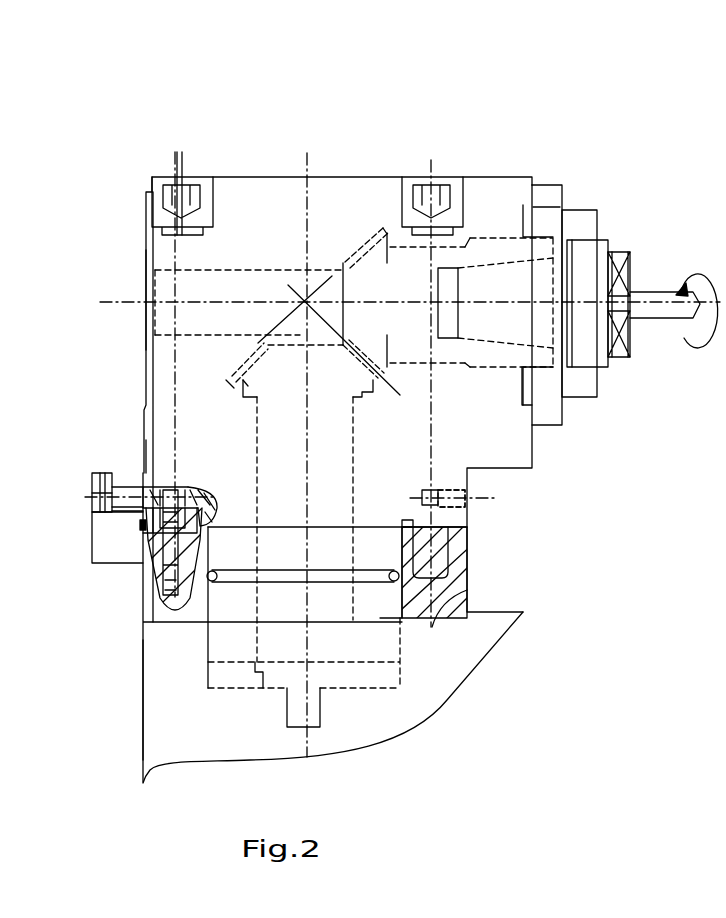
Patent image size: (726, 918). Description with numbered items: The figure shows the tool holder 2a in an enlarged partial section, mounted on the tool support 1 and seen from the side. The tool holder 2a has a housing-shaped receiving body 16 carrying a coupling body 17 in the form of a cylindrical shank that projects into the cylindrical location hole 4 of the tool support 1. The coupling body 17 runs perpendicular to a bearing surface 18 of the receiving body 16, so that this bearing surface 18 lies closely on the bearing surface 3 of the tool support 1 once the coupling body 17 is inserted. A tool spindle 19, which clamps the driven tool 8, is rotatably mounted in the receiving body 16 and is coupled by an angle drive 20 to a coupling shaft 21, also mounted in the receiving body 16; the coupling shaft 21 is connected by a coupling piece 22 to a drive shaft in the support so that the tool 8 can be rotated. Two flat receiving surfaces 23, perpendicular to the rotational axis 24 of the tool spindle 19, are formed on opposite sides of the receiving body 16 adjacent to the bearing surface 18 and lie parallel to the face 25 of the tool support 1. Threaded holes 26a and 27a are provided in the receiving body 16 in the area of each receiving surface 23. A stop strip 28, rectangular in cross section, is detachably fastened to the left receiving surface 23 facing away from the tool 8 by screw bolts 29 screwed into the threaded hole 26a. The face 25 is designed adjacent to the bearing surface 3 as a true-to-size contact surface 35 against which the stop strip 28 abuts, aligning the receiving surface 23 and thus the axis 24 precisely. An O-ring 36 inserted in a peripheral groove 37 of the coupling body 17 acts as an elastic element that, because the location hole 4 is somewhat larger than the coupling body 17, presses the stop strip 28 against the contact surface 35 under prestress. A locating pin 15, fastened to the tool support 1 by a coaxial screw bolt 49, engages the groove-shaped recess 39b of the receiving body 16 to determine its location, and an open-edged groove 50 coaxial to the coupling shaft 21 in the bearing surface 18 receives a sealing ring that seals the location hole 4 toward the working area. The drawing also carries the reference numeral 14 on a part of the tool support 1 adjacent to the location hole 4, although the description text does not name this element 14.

The tool support 1 is at (147, 705).
The tool holder 2a is at (333, 166).
The bearing surface 3 is at (453, 533).
The location hole 4 is at (405, 592).
The driven tool 8 is at (645, 300).
The bearing block 14 is at (455, 562).
The locating pin 15 is at (208, 195).
The receiving body 16 is at (512, 447).
The coupling body 17 is at (390, 642).
The bearing surface 18 is at (372, 500).
The tool spindle 19 is at (483, 250).
The angle drive 20 is at (404, 397).
The coupling shaft 21 is at (268, 423).
The coupling piece 22 is at (310, 715).
The receiving surface 23 is at (143, 473).
The rotational axis 24 is at (146, 300).
The face 25 is at (140, 670).
The threaded hole 26a is at (185, 490).
The threaded hole 27a is at (448, 490).
The stop strip 28 is at (118, 530).
The screw bolt 29 is at (100, 474).
The contact surface 35 is at (143, 612).
The O-ring 36 is at (394, 582).
The peripheral groove 37 is at (278, 578).
The groove-shaped recess 39b is at (205, 513).
The screw bolt 49 is at (195, 560).
The open-edged groove 50 is at (405, 520).